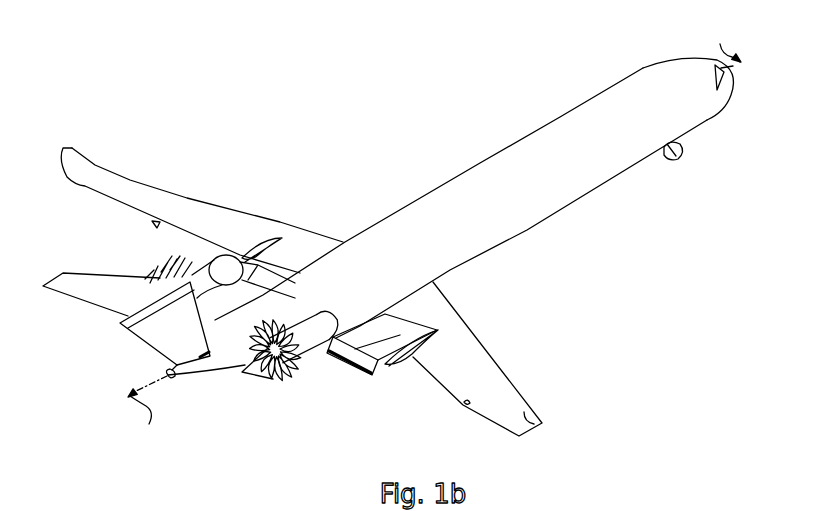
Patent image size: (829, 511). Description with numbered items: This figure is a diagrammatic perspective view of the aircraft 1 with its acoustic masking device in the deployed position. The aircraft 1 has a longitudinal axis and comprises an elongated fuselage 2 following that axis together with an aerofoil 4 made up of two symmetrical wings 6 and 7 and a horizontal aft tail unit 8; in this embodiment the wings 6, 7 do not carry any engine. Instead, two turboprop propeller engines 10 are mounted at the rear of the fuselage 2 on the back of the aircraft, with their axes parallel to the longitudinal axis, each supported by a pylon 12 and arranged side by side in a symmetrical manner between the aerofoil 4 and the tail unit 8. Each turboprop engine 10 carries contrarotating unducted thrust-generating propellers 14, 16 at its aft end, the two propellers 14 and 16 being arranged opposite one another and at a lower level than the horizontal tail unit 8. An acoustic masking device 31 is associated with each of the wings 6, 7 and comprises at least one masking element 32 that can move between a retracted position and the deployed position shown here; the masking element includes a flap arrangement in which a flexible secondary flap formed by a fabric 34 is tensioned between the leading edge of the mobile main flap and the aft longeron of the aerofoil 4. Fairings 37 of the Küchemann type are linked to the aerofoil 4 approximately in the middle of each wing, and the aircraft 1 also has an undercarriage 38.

The aircraft 1 is at (400, 105).
The fuselage 2 is at (553, 235).
The aerofoil 4 is at (86, 249).
The wing 6 is at (498, 365).
The wing 7 is at (193, 203).
The horizontal aft tail unit 8 is at (73, 285).
The turboprop propeller engine 10 is at (311, 350).
The pylon 12 is at (210, 257).
The propeller 14 is at (282, 384).
The propeller 16 is at (291, 375).
The acoustic masking device 31 is at (372, 382).
The masking element 32 is at (357, 367).
The fabric 34 is at (367, 340).
The fairing 37 is at (257, 242).
The undercarriage 38 is at (329, 357).